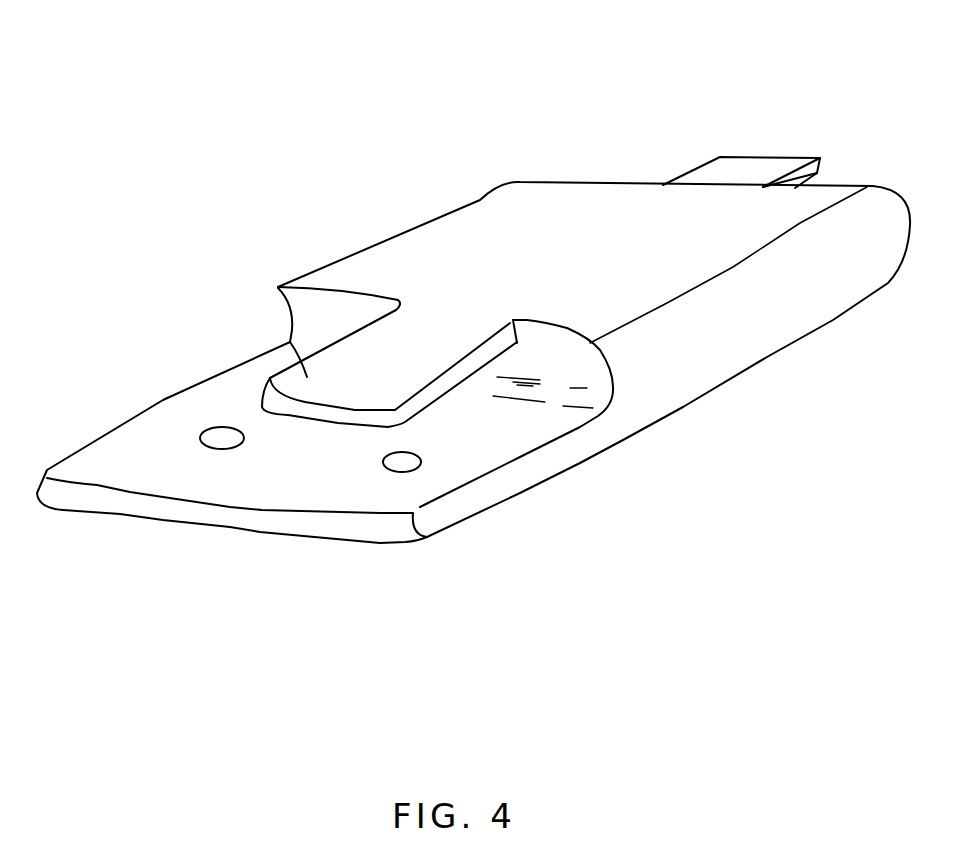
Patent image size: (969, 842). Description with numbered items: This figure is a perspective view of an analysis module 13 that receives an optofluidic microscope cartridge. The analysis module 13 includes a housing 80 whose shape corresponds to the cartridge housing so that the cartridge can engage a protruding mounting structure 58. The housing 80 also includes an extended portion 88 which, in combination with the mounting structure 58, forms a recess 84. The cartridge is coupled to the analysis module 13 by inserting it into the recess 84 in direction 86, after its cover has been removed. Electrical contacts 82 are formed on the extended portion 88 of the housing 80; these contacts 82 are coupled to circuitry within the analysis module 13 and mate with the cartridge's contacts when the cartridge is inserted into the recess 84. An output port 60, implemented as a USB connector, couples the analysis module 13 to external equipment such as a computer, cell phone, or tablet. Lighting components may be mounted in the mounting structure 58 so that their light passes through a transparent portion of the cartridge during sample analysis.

The analysis module 13 is at (517, 63).
The mounting structure 58 is at (290, 345).
The output port 60 is at (745, 167).
The housing 80 is at (770, 357).
The electrical contacts 82 is at (200, 441).
The recess 84 is at (492, 412).
The direction 86 is at (298, 475).
The extended portion 88 is at (550, 468).